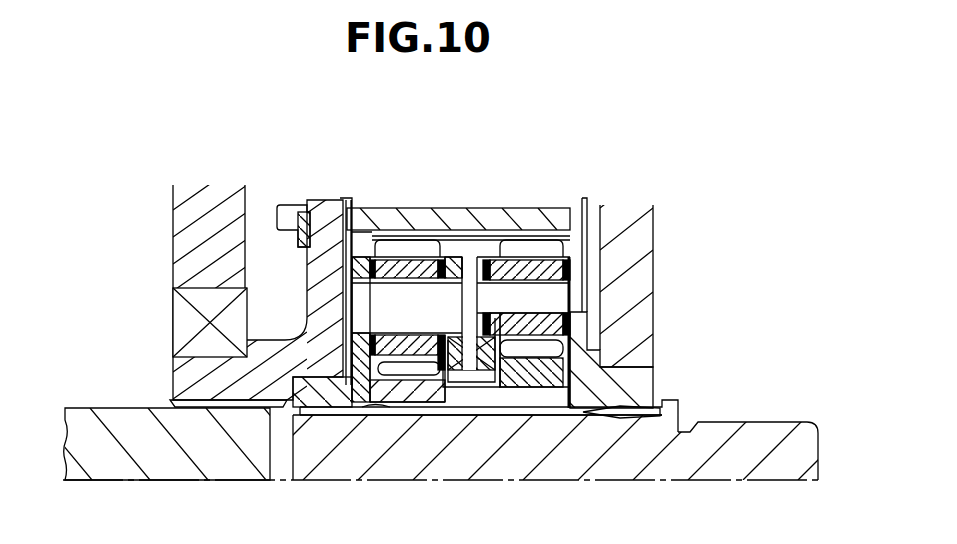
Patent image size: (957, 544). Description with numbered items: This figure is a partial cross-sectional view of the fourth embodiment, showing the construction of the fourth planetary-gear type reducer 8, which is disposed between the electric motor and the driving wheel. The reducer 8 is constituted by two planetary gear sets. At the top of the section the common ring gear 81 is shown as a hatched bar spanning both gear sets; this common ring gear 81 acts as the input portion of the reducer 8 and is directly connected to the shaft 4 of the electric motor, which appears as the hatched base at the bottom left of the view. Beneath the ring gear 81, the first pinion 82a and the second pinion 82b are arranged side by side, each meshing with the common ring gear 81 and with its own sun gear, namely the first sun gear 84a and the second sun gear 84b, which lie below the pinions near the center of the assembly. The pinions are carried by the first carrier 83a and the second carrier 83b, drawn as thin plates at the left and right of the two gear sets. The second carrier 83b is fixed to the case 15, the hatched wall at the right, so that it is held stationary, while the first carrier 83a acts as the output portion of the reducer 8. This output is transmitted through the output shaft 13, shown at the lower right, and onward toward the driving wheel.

The shaft 4 is at (147, 447).
The fourth planetary-gear type reducer 8 is at (487, 200).
The output shaft 13 is at (689, 455).
The case 15 is at (653, 216).
The common ring gear 81 is at (465, 215).
The first pinion 82a is at (397, 262).
The second pinion 82b is at (525, 262).
The first carrier 83a is at (356, 225).
The second carrier 83b is at (583, 250).
The first sun gear 84a is at (408, 387).
The second sun gear 84b is at (538, 390).